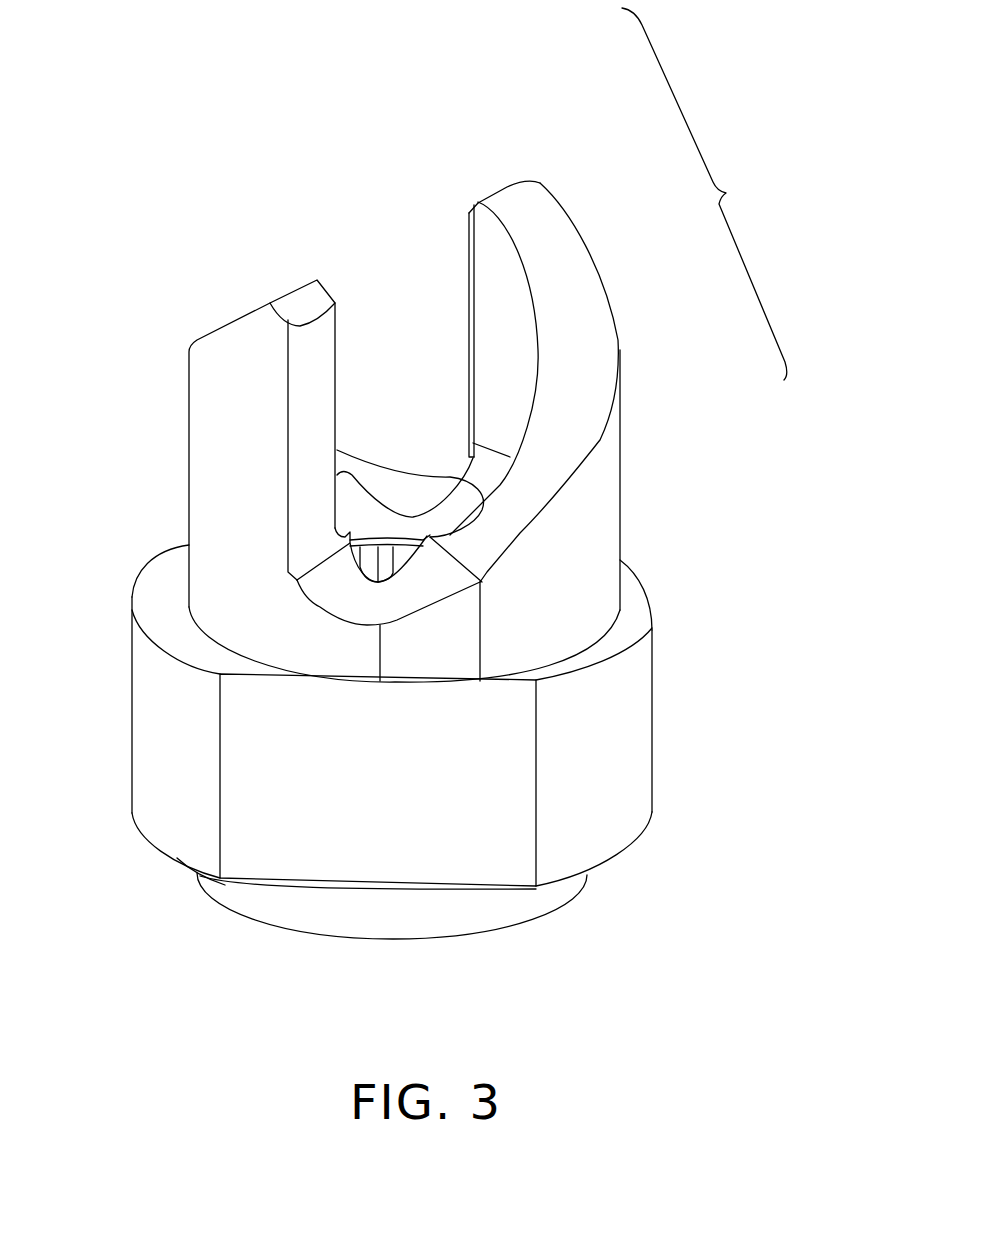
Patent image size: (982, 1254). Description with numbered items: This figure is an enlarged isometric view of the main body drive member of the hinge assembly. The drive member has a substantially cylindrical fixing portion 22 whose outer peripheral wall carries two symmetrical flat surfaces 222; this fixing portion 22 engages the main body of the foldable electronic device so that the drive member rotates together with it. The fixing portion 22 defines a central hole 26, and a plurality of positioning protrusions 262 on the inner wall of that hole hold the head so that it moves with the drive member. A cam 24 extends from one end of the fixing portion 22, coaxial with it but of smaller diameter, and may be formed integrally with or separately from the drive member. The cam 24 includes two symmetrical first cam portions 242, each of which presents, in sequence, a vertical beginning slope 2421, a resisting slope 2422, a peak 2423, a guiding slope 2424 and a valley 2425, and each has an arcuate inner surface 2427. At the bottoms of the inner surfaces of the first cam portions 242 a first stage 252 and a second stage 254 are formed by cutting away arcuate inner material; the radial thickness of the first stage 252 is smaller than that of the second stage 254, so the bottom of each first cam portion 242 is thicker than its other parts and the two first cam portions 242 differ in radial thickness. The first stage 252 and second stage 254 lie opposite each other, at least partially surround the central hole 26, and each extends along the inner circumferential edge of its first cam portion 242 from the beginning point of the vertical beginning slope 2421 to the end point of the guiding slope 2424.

The fixing portion 22 is at (620, 746).
The flat surfaces 222 is at (447, 822).
The cam 24 is at (572, 557).
The first cam portions 242 is at (633, 295).
The vertical beginning slope 2421 is at (498, 333).
The resisting slope 2422 is at (473, 207).
The peak 2423 is at (507, 187).
The guiding slope 2424 is at (580, 322).
The valley 2425 is at (432, 577).
The arcuate inner surface 2427 is at (475, 303).
The first stage 252 is at (347, 470).
The second stage 254 is at (481, 495).
The central hole 26 is at (368, 518).
The positioning protrusions 262 is at (385, 558).